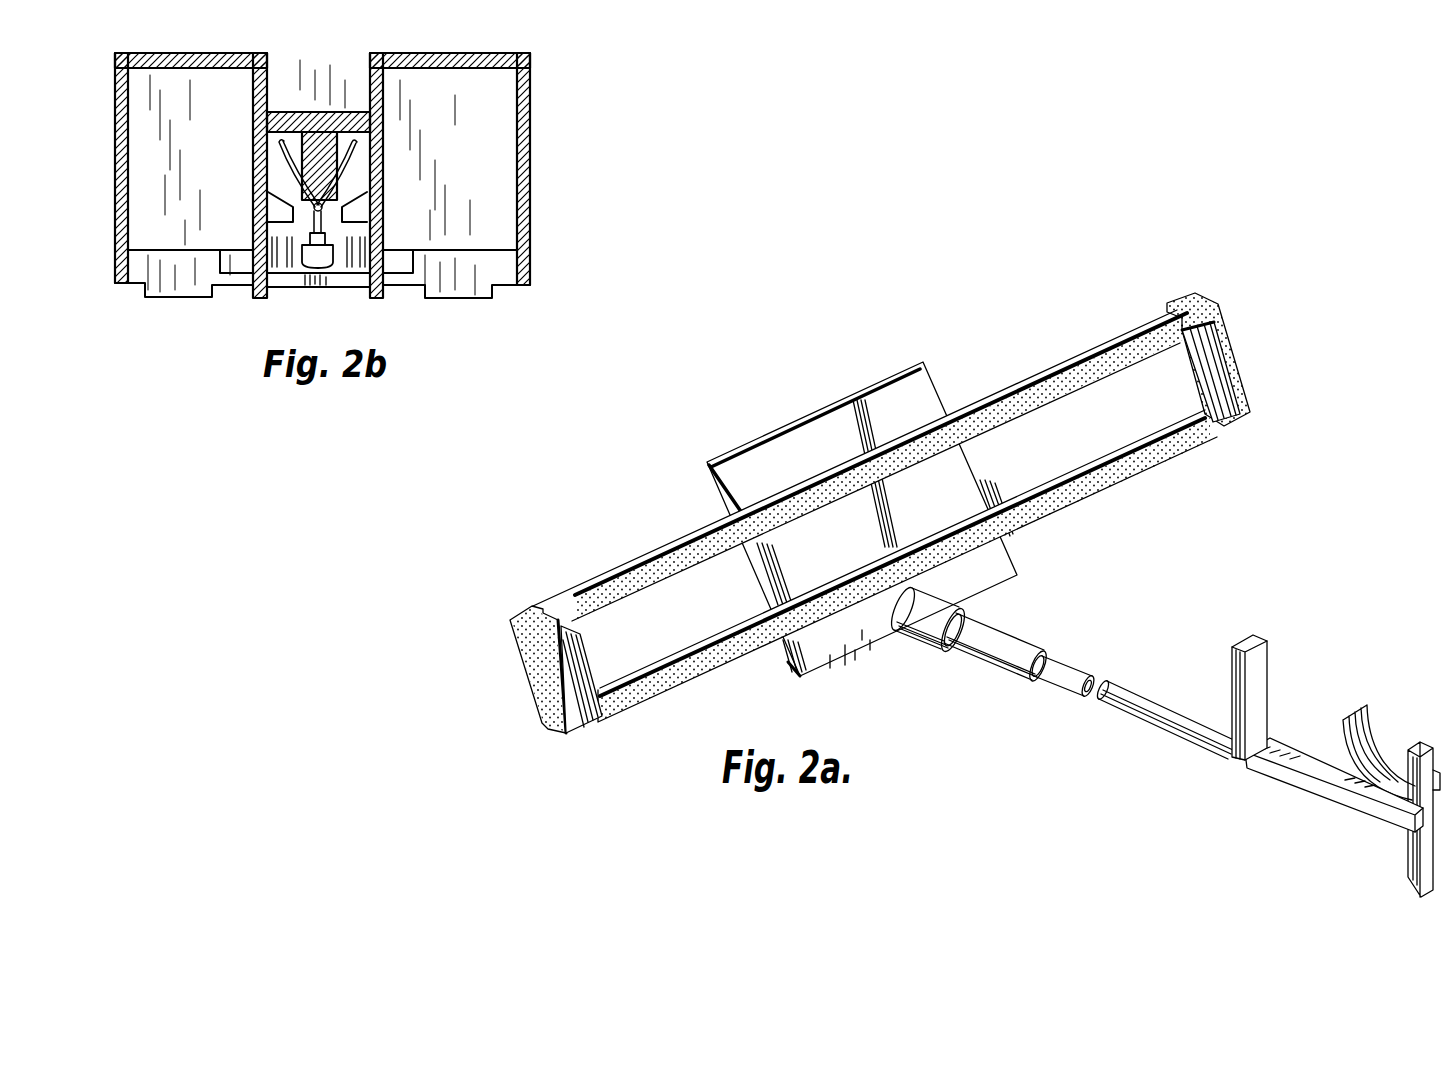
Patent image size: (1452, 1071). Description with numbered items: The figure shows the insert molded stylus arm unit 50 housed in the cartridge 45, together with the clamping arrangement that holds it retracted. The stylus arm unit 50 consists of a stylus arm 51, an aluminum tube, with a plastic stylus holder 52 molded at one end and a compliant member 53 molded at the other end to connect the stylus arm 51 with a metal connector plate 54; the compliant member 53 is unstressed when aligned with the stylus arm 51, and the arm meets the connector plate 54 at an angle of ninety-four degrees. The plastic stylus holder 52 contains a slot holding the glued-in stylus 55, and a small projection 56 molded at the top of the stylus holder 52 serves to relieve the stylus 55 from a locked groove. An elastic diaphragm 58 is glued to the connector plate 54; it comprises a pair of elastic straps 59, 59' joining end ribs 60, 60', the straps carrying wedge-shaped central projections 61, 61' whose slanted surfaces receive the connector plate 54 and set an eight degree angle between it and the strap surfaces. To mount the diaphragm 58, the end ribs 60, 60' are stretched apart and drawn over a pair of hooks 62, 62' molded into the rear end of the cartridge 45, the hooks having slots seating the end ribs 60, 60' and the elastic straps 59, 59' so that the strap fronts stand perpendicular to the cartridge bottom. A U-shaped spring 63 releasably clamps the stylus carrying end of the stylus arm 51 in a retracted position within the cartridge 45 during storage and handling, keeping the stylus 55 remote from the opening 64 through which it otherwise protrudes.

In FIG. 2b, the cartridge 45 is at (536, 163).
In FIG. 2a, the insert molded stylus arm unit 50 is at (1163, 728).
In FIG. 2b, the stylus arm 51 is at (313, 232).
In FIG. 2a, the stylus arm 51 is at (1160, 717).
In FIG. 2a, the plastic stylus holder 52 is at (1287, 772).
In FIG. 2b, the compliant member 53 is at (322, 264).
In FIG. 2a, the compliant member 53 is at (990, 653).
In FIG. 2a, the connector plate 54 is at (997, 562).
In FIG. 2a, the stylus 55 is at (1415, 853).
In FIG. 2a, the small projection 56 is at (1263, 680).
In FIG. 2a, the elastic diaphragm 58 is at (869, 498).
In FIG. 2a, the elastic strap 59 is at (860, 465).
In FIG. 2a, the elastic strap 59' is at (907, 566).
In FIG. 2a, the end rib 60 is at (521, 669).
In FIG. 2a, the end rib 60' is at (1214, 344).
In FIG. 2a, the central projection 61 is at (920, 457).
In FIG. 2a, the central projection 61' is at (1008, 497).
In FIG. 2a, the hook 62 is at (597, 679).
In FIG. 2a, the hook 62' is at (1182, 372).
In FIG. 2b, the U-shaped spring 63 is at (352, 165).
In FIG. 2b, the opening 64 is at (318, 293).